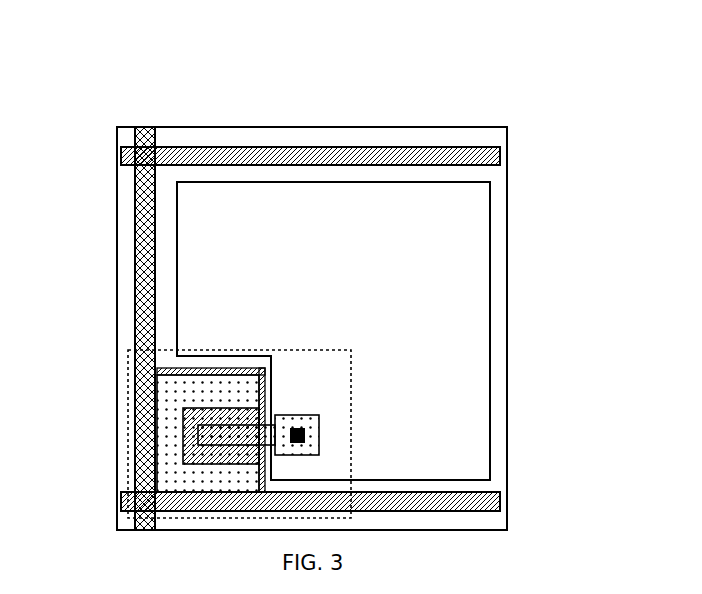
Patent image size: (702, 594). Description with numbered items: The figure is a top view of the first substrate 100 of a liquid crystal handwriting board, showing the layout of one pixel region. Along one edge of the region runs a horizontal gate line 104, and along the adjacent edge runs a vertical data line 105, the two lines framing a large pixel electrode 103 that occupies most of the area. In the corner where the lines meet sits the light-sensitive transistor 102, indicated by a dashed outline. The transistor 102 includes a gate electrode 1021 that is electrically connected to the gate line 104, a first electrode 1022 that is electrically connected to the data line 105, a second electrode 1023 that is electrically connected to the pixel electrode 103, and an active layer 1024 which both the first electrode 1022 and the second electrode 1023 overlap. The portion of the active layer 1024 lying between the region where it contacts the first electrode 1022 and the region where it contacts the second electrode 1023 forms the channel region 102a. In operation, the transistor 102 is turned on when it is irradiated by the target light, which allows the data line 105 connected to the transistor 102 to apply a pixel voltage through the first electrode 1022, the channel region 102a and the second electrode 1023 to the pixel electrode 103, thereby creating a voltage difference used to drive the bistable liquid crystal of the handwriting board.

The first substrate 100 is at (93, 54).
The transistor 102 is at (324, 414).
The channel region 102a is at (200, 417).
The gate electrode 1021 is at (255, 358).
The first electrode 1022 is at (200, 370).
The second electrode 1023 is at (298, 406).
The active layer 1024 is at (258, 458).
The pixel electrode 103 is at (470, 302).
The gate line 104 is at (357, 140).
The data line 105 is at (145, 118).